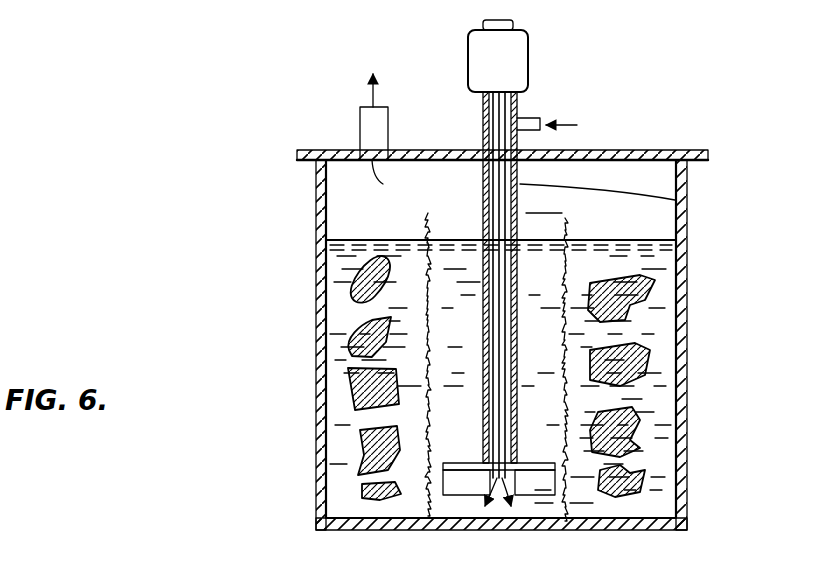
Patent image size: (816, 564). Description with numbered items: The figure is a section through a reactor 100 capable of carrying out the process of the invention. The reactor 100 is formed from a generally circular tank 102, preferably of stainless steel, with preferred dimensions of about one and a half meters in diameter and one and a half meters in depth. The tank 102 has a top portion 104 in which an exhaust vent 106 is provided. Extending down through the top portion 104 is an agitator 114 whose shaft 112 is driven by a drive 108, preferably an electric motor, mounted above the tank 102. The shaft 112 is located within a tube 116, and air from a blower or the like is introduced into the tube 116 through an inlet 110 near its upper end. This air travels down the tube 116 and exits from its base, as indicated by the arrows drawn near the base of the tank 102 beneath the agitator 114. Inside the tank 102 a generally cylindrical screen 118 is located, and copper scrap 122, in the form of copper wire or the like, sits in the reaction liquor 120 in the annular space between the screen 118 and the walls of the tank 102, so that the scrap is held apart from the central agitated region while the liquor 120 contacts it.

The reactor 100 is at (295, 292).
The tank 102 is at (687, 453).
The top portion 104 is at (637, 152).
The exhaust vent 106 is at (365, 128).
The drive 108 is at (502, 58).
The inlet 110 is at (520, 117).
The shaft 112 is at (497, 183).
The agitator 114 is at (537, 487).
The tube 116 is at (687, 202).
The screen 118 is at (427, 215).
The reaction liquor 120 is at (642, 263).
The copper scrap 122 is at (350, 387).